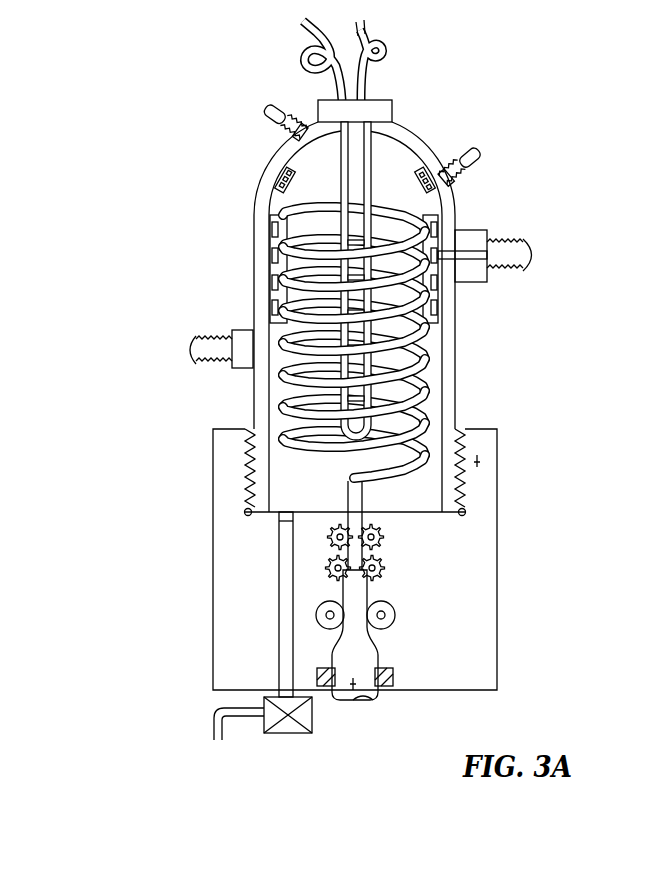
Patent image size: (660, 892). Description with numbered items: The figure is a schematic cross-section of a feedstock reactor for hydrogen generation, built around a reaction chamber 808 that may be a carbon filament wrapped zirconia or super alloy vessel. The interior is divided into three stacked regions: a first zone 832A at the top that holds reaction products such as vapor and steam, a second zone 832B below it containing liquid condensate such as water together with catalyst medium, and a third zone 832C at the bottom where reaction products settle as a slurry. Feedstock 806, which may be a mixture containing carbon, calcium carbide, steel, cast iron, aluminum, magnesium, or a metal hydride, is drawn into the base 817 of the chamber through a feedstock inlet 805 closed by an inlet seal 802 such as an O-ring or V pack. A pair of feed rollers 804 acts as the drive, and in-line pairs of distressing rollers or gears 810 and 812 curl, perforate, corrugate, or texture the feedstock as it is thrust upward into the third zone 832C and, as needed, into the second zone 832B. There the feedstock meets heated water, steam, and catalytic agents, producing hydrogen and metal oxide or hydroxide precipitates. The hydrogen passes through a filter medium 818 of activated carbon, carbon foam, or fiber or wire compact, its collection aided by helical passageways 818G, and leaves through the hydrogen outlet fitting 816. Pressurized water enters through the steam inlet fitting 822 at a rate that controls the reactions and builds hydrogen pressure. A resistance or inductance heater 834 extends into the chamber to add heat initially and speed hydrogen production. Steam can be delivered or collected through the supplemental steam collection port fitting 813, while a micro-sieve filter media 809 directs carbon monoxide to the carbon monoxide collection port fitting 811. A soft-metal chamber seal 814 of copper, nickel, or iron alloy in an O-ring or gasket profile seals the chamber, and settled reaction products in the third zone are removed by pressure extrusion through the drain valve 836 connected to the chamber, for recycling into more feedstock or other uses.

The inlet seal 802 is at (357, 685).
The feed rollers 804 is at (384, 616).
The feedstock inlet 805 is at (327, 693).
The feedstock 806 is at (380, 692).
The reaction chamber 808 is at (398, 139).
The micro-sieve filter media 809 is at (267, 203).
The distressing rollers 810 is at (384, 573).
The carbon monoxide collection port fitting 811 is at (462, 164).
The distressing rollers 812 is at (382, 541).
The supplemental steam collection port fitting 813 is at (278, 124).
The chamber seal 814 is at (465, 512).
The hydrogen outlet fitting 816 is at (472, 230).
The base 817 is at (483, 461).
The filter medium 818 is at (450, 322).
The helical passageways 818G is at (443, 308).
The steam inlet fitting 822 is at (195, 335).
The first zone 832A is at (278, 352).
The second zone 832B is at (282, 400).
The third zone 832C is at (290, 430).
The heater 834 is at (384, 108).
The drain valve 836 is at (290, 714).